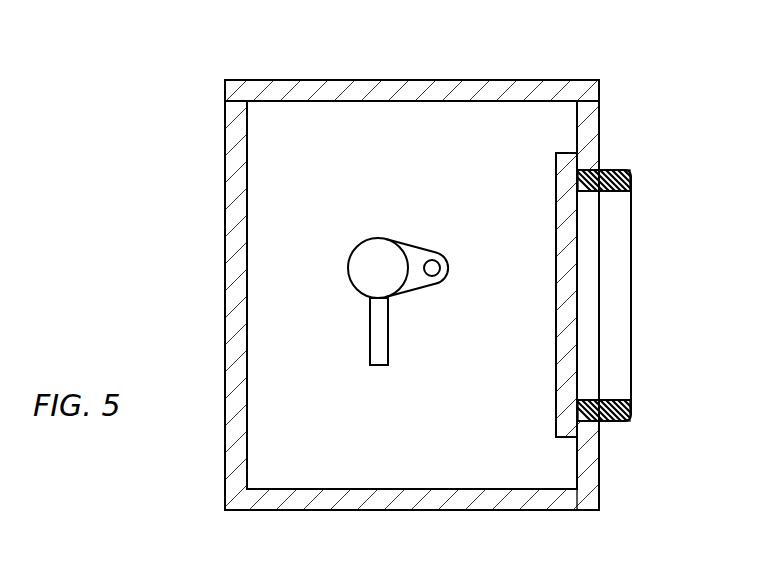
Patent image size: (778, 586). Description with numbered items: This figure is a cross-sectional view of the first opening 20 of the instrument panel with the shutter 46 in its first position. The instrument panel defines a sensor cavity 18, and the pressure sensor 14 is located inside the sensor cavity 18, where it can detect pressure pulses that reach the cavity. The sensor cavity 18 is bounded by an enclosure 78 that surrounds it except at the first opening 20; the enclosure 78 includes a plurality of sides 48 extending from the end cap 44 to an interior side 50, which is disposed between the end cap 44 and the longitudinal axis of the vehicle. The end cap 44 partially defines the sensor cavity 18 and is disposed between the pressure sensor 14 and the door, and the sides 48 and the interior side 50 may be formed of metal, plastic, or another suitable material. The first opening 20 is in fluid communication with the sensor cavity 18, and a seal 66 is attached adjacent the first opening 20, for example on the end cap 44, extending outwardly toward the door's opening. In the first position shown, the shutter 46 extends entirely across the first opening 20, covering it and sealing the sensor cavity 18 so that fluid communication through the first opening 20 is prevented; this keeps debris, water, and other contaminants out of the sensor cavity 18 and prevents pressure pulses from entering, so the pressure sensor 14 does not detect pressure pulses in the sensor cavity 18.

The pressure sensor 14 is at (356, 290).
The sensor cavity 18 is at (329, 450).
The first opening 20 is at (637, 293).
The end cap 44 is at (600, 460).
The shutter 46 is at (556, 218).
The sides 48 is at (432, 80).
The interior side 50 is at (224, 258).
The seal 66 is at (620, 168).
The enclosure 78 is at (322, 70).